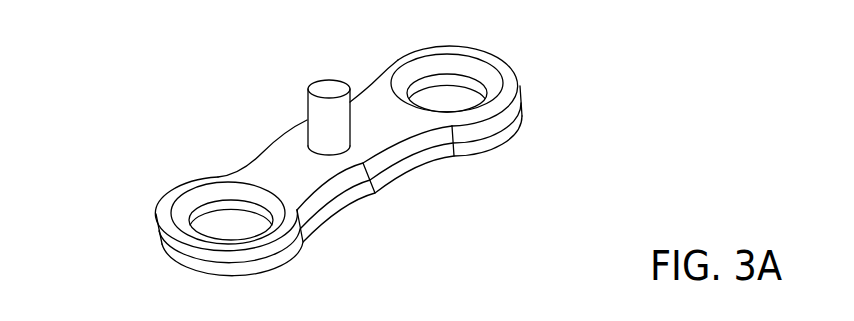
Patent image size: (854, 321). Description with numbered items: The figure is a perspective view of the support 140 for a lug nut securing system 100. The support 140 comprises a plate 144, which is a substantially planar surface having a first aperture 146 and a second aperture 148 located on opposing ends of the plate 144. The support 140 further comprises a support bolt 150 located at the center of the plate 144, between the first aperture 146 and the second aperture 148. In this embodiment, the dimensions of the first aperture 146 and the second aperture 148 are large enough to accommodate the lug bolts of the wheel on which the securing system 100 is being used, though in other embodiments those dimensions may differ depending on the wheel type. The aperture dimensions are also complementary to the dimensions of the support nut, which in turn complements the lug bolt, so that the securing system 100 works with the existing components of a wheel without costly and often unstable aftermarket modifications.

The securing system 100 is at (88, 65).
The support 140 is at (112, 133).
The plate 144 is at (313, 177).
The first aperture 146 is at (460, 108).
The second aperture 148 is at (217, 229).
The support bolt 150 is at (330, 88).